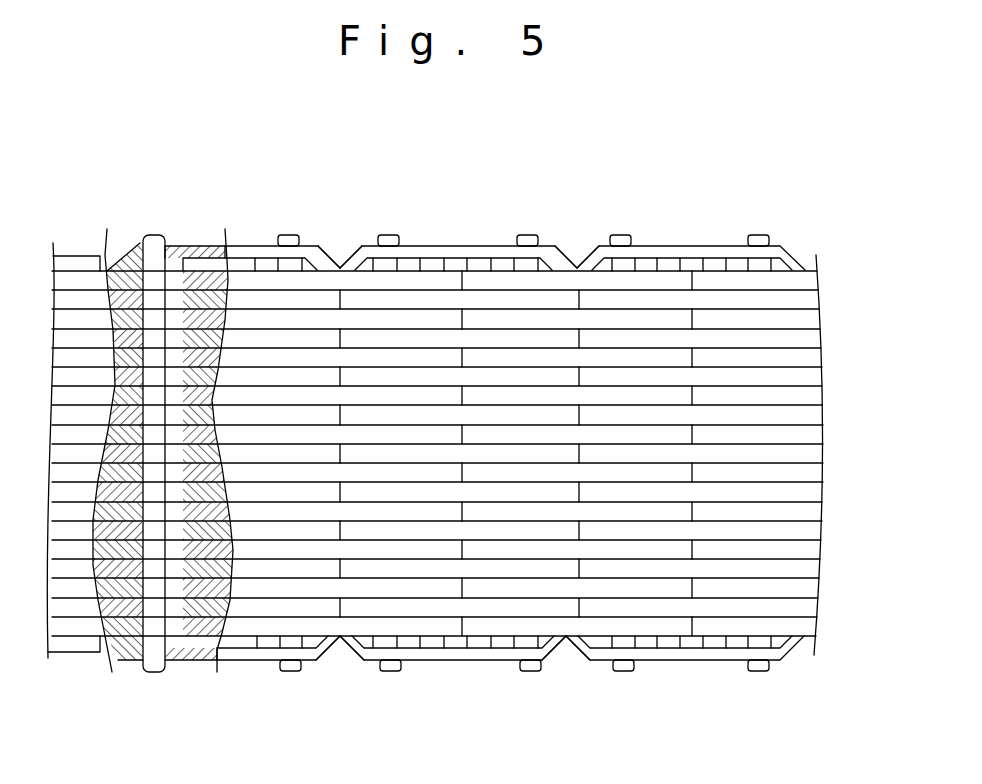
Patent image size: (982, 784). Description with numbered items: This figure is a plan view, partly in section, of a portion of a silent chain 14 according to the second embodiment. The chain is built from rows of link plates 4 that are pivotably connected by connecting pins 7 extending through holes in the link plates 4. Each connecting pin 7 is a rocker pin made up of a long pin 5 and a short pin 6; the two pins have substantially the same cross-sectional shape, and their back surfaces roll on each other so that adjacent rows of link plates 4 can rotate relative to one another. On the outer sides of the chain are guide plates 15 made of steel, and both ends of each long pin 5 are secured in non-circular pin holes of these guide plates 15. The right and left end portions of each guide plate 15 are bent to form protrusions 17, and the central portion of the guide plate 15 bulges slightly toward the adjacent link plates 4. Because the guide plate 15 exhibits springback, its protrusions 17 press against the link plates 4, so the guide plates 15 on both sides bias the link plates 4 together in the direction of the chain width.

The link plate 4 is at (338, 266).
The long pin 5 is at (152, 235).
The short pin 6 is at (183, 246).
The connecting pin 7 is at (225, 173).
The silent chain 14 is at (583, 220).
The guide plate 15 is at (455, 243).
The protrusion 17 is at (565, 248).